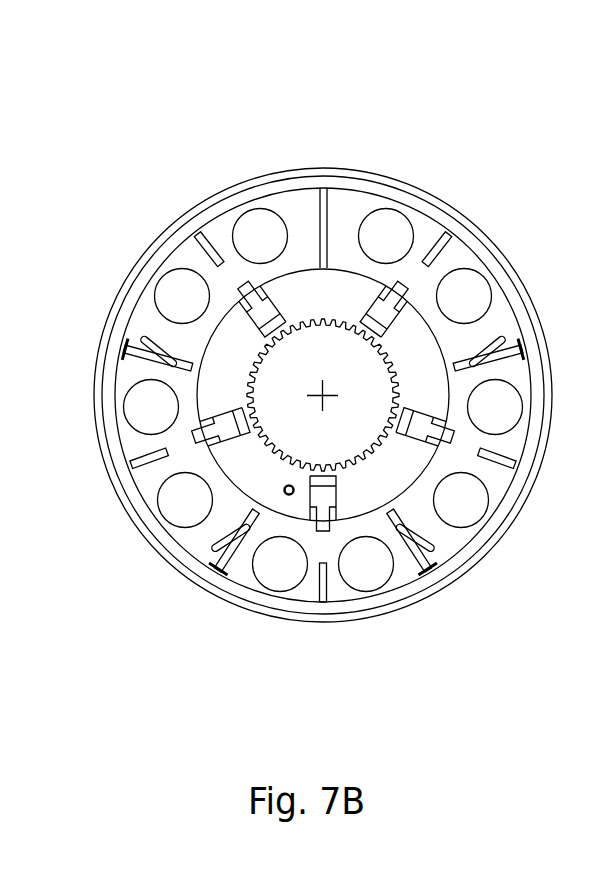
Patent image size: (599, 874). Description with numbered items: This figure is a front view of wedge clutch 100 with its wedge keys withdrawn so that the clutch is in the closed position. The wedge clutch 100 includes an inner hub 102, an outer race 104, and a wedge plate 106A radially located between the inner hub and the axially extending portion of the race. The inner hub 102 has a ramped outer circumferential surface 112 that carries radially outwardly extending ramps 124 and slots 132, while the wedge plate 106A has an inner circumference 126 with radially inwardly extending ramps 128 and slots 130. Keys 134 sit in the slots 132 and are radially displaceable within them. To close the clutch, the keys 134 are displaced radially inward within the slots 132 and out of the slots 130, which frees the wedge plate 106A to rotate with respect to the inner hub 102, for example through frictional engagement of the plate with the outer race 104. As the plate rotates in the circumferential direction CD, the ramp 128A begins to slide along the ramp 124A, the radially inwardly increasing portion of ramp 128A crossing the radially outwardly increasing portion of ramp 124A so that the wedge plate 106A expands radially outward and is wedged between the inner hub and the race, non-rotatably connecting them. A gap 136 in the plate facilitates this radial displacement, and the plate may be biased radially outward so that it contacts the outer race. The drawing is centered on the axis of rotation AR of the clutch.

The wedge clutch 100 is at (461, 144).
The inner hub 102 is at (393, 477).
The outer race 104 is at (172, 228).
The wedge plate 106A is at (295, 210).
The outer circumferential surface 112 is at (266, 508).
The radially outwardly extending ramps 124 is at (430, 372).
The ramp 124A is at (333, 287).
The inner circumference 126 is at (225, 478).
The radially inwardly extending ramps 128 is at (418, 302).
The ramp 128A is at (388, 273).
The slots 130 is at (450, 420).
The slots 132 is at (192, 334).
The keys 134 is at (267, 312).
The gap 136 is at (325, 203).
The axis of rotation AR is at (322, 396).
The circumferential direction CD is at (278, 67).